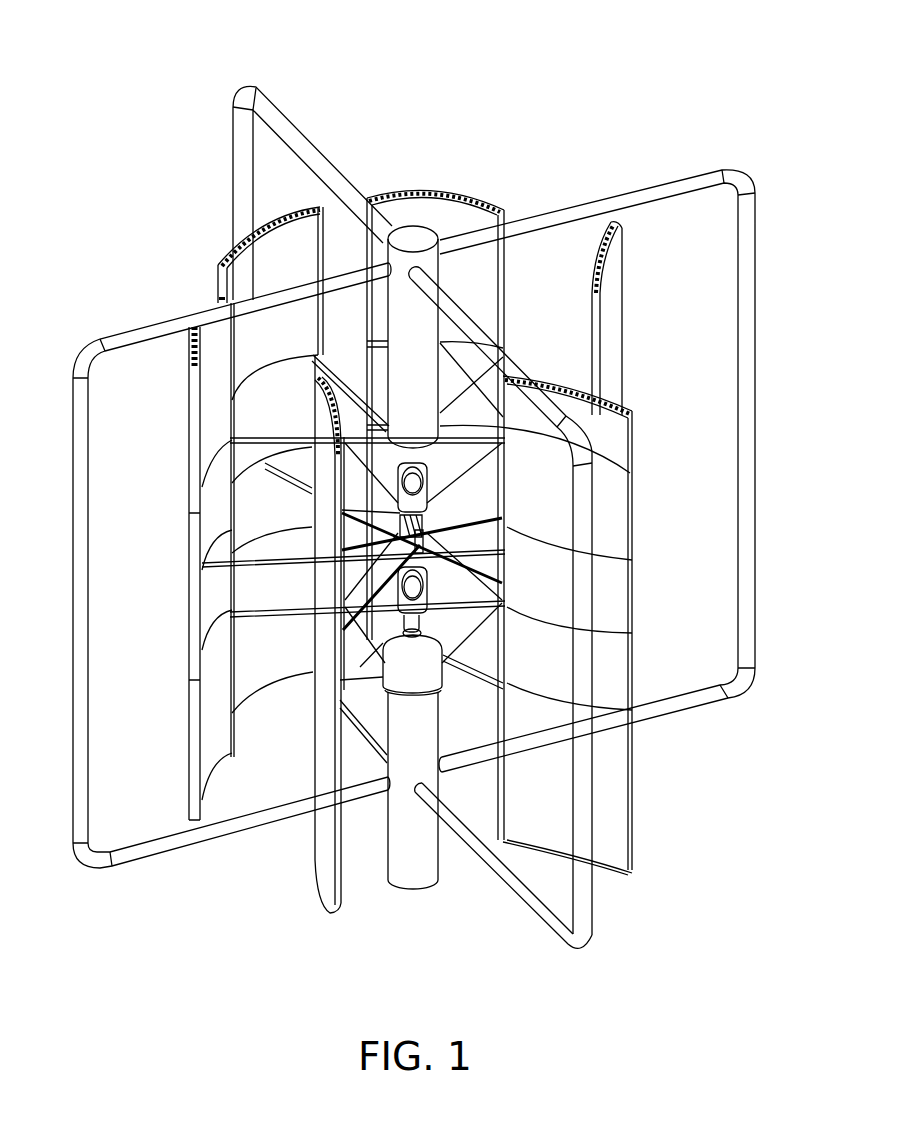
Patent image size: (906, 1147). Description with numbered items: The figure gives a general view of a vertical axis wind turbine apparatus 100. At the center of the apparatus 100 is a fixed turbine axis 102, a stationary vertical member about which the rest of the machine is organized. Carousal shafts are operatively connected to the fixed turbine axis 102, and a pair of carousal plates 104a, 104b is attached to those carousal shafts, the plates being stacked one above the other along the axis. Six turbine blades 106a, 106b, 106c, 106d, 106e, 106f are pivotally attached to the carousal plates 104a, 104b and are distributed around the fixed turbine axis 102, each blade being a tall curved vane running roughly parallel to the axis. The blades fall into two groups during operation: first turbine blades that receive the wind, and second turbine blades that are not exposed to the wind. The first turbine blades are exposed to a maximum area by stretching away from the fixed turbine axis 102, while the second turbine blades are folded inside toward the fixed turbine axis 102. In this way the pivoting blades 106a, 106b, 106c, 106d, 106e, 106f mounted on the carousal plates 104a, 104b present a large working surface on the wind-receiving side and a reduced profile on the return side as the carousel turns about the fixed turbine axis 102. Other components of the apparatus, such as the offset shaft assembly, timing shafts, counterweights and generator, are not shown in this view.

The apparatus 100 is at (178, 80).
The fixed turbine axis 102 is at (422, 327).
The carousal plate 104a is at (423, 500).
The carousal plate 104b is at (423, 600).
The turbine blade 106a is at (442, 196).
The turbine blade 106b is at (612, 307).
The turbine blade 106c is at (612, 808).
The turbine blade 106d is at (330, 862).
The turbine blade 106e is at (190, 497).
The turbine blade 106f is at (245, 269).